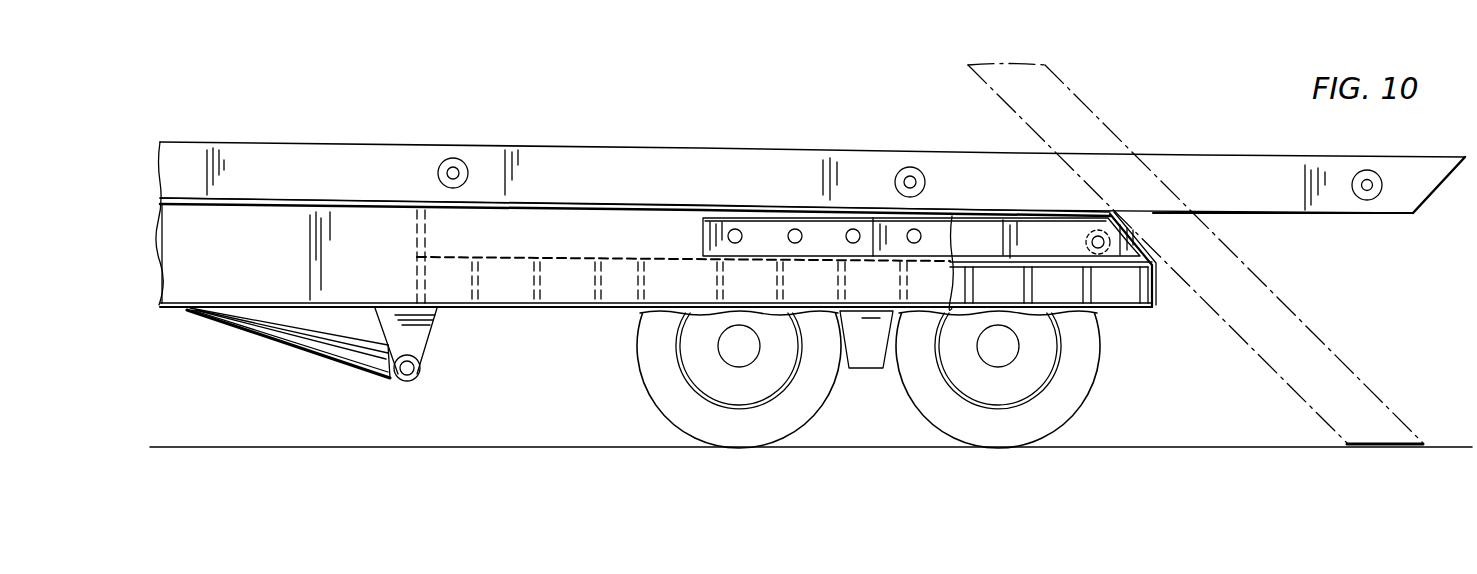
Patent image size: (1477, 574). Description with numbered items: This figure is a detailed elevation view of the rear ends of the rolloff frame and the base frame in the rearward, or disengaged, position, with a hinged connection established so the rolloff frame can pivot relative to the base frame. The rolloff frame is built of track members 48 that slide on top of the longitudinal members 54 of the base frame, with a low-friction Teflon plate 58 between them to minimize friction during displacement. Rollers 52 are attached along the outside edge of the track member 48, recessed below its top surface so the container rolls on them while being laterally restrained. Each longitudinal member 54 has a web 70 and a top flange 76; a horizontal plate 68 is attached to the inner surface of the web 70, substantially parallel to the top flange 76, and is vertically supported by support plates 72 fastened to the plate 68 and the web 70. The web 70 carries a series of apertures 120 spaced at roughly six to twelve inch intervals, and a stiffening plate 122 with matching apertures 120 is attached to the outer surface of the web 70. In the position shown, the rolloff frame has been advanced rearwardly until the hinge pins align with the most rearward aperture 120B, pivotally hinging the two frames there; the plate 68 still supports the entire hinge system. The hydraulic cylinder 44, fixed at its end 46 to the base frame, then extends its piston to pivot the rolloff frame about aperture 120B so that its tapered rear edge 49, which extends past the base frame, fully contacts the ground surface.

The hydraulic cylinder 44 is at (330, 363).
The cylinder end 46 is at (418, 345).
The track member 48 is at (710, 167).
The rear edge 49 is at (1436, 196).
The roller 52 is at (453, 158).
The longitudinal member 54 is at (188, 285).
The Teflon plate 58 is at (268, 204).
The horizontal plate 68 is at (608, 257).
The web 70 is at (232, 250).
The support plate 72 is at (593, 280).
The top flange 76 is at (532, 212).
The aperture 120 is at (795, 227).
The most rearward aperture 120B is at (1100, 256).
The plate 122 is at (832, 232).